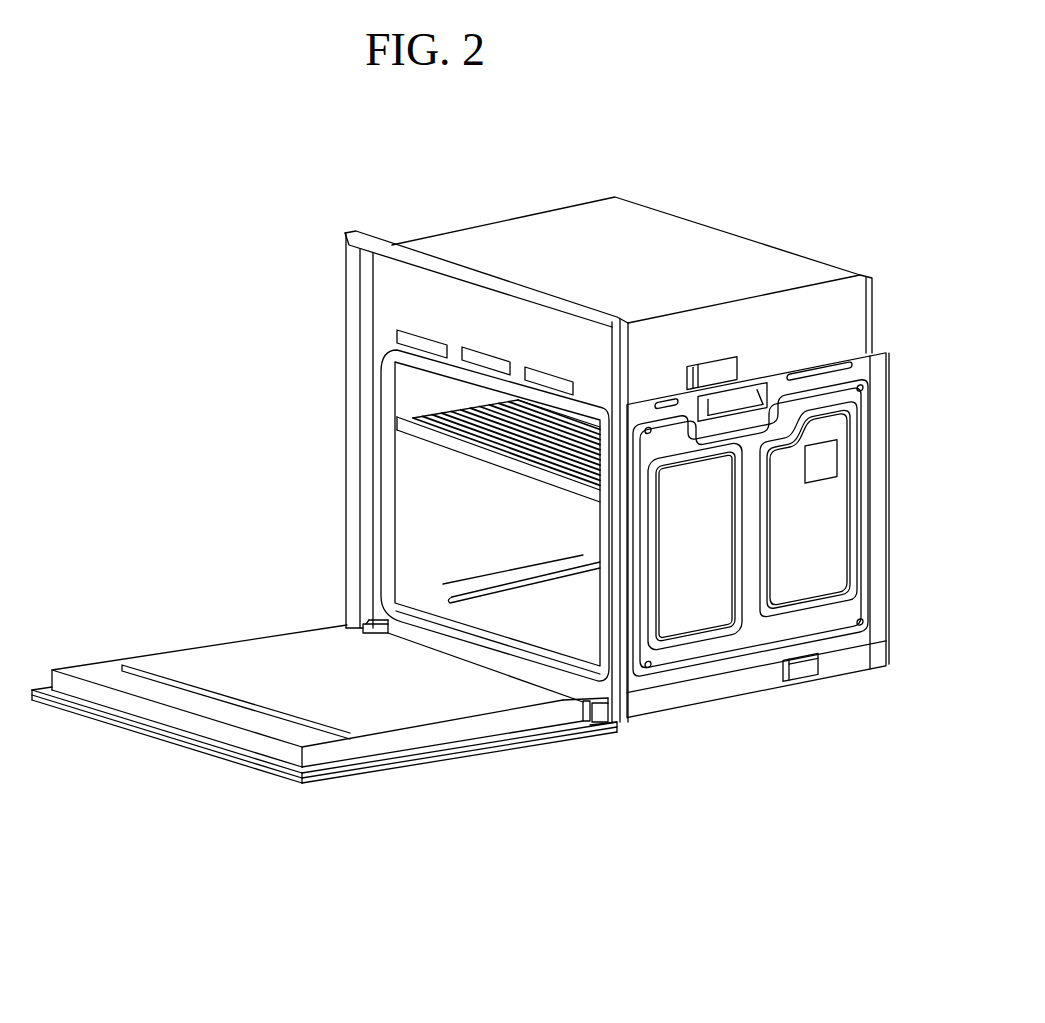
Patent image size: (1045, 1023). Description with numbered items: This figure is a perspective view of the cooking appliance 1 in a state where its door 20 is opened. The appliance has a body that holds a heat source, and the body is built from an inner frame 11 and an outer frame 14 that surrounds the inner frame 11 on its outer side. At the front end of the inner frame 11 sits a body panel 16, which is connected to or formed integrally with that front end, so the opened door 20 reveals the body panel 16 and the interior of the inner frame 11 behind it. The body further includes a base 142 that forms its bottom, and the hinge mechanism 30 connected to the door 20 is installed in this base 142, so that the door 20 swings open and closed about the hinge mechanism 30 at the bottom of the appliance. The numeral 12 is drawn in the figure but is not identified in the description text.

The cooking appliance 1 is at (481, 186).
The inner frame 11 is at (425, 472).
The cooking chamber bottom 12 is at (552, 616).
The outer frame 14 is at (880, 438).
The body panel 16 is at (388, 308).
The door 20 is at (351, 795).
The hinge mechanism 30 is at (597, 730).
The base 142 is at (704, 693).